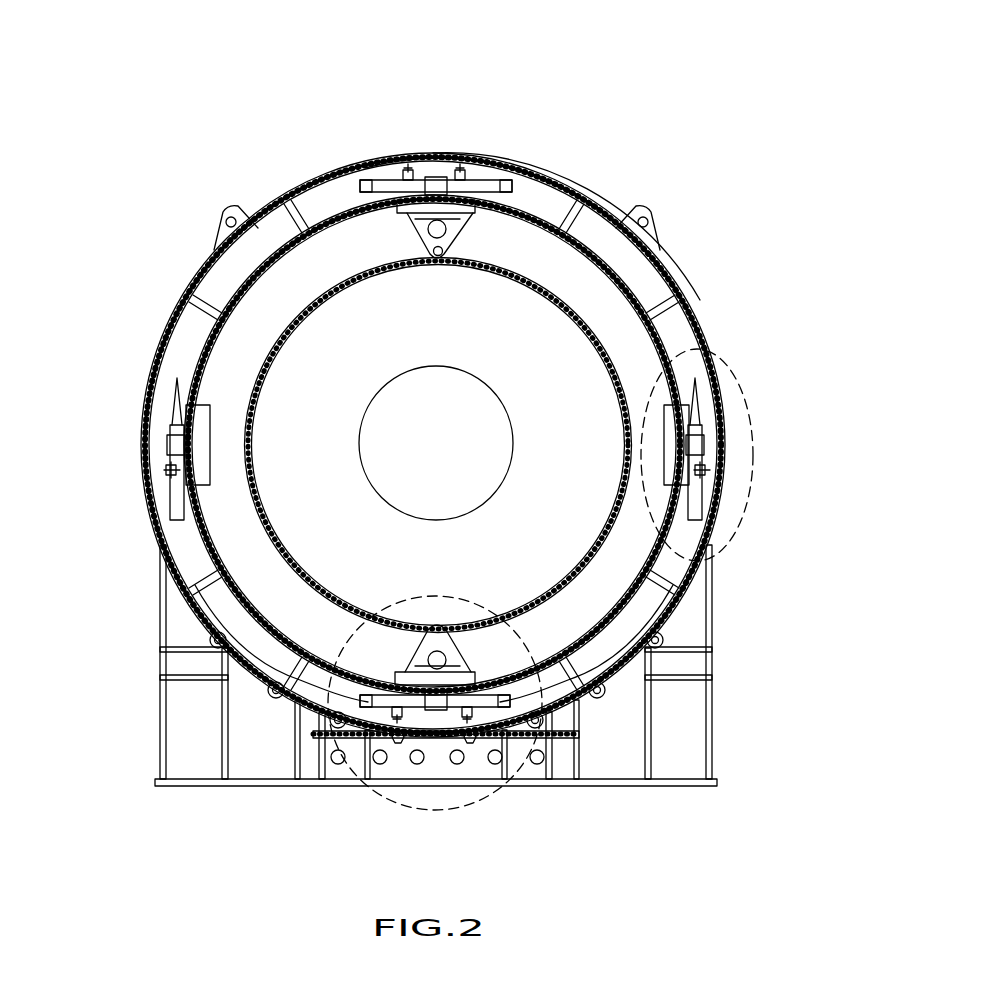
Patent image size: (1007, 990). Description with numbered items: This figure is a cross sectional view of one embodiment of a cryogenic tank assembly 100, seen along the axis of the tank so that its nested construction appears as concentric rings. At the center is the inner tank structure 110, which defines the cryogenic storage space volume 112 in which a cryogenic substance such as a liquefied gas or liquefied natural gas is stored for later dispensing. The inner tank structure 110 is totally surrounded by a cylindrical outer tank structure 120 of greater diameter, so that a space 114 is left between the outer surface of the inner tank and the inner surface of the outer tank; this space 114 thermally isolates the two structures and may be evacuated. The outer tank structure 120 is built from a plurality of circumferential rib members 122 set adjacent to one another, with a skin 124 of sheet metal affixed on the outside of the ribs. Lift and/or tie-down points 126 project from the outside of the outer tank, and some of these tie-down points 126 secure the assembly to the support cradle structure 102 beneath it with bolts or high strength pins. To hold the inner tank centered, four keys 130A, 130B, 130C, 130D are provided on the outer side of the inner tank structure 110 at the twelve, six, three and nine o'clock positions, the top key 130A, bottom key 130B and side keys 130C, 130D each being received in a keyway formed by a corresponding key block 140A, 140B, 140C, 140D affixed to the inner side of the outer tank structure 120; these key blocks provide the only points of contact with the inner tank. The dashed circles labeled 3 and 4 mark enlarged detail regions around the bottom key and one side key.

The cryogenic tank assembly 100 is at (570, 63).
The support cradle structure 102 is at (128, 520).
The inner tank structure 110 is at (672, 285).
The cryogenic storage space volume 112 is at (545, 305).
The space 114 is at (690, 322).
The outer tank structure 120 is at (670, 260).
The circumferential rib members 122 is at (545, 190).
The skin 124 is at (368, 162).
The lift and/or tie-down points 126 is at (220, 212).
The top key 130A is at (428, 172).
The bottom key 130B is at (435, 712).
The side key 130C is at (705, 440).
The side key 130D is at (160, 440).
The key block 140A is at (370, 176).
The key block 140B is at (399, 720).
The key block 140C is at (700, 492).
The key block 140D is at (178, 482).
The detail view 3 is at (382, 785).
The detail view 4 is at (737, 540).